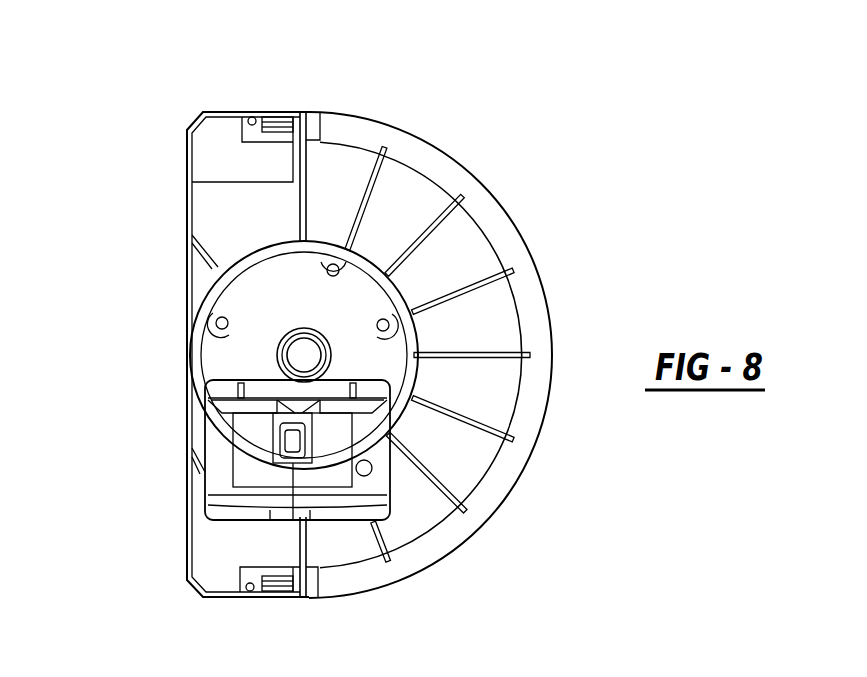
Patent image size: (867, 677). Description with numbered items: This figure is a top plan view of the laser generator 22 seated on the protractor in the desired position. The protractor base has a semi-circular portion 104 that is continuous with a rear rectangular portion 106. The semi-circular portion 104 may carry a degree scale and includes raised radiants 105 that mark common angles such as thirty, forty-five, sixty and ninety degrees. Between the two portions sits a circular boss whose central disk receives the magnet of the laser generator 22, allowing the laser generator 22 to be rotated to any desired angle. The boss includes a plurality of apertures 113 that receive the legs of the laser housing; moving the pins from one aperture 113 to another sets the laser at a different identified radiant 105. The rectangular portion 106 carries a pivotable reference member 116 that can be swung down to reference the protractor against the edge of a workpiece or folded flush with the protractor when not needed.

The laser generator 22 is at (200, 480).
The semi-circular portion 104 is at (548, 297).
The raised radiants 105 is at (464, 195).
The rear rectangular portion 106 is at (187, 195).
The apertures 113 is at (333, 265).
The reference member 116 is at (215, 150).